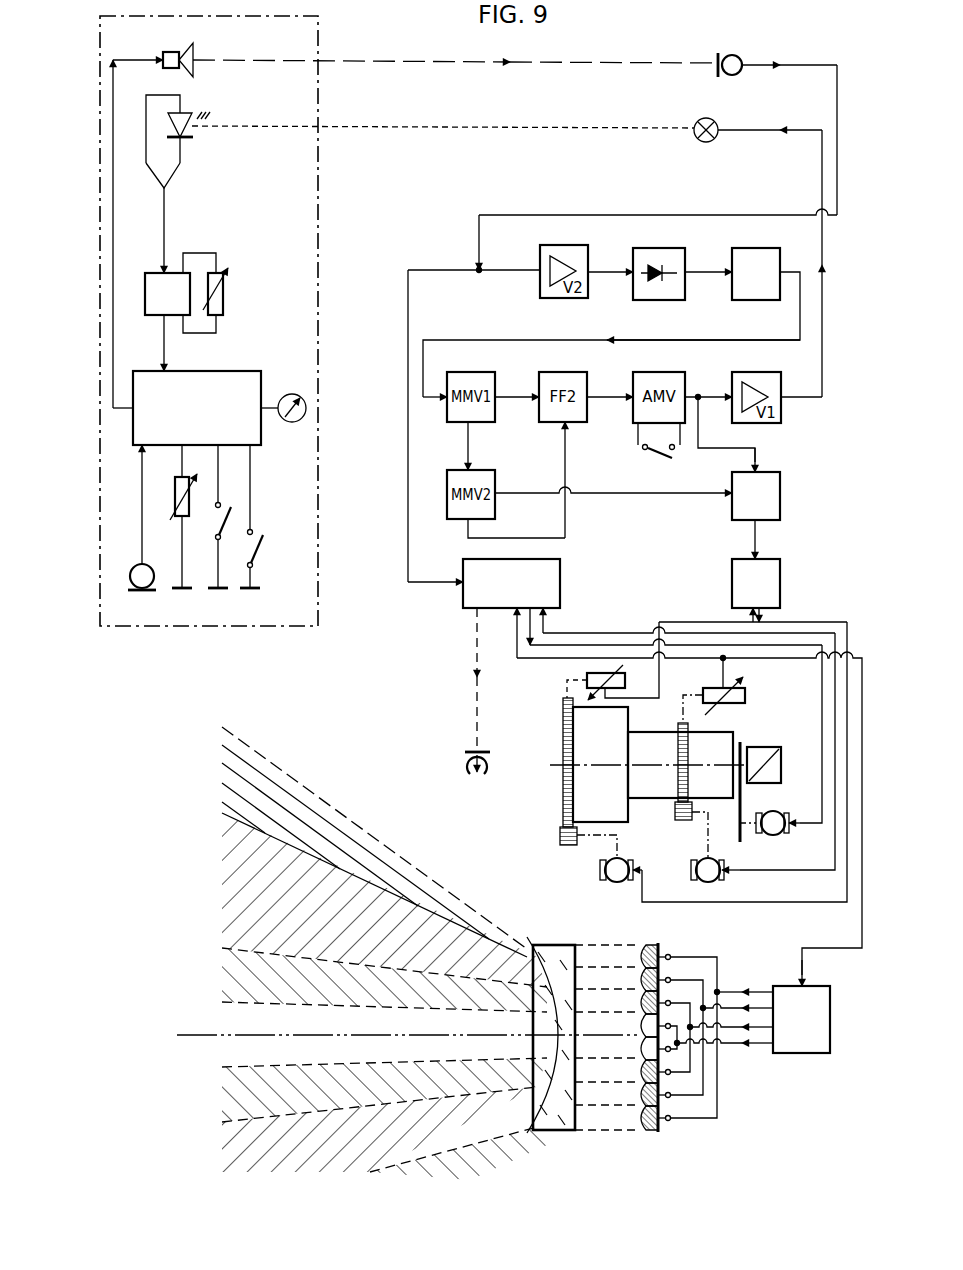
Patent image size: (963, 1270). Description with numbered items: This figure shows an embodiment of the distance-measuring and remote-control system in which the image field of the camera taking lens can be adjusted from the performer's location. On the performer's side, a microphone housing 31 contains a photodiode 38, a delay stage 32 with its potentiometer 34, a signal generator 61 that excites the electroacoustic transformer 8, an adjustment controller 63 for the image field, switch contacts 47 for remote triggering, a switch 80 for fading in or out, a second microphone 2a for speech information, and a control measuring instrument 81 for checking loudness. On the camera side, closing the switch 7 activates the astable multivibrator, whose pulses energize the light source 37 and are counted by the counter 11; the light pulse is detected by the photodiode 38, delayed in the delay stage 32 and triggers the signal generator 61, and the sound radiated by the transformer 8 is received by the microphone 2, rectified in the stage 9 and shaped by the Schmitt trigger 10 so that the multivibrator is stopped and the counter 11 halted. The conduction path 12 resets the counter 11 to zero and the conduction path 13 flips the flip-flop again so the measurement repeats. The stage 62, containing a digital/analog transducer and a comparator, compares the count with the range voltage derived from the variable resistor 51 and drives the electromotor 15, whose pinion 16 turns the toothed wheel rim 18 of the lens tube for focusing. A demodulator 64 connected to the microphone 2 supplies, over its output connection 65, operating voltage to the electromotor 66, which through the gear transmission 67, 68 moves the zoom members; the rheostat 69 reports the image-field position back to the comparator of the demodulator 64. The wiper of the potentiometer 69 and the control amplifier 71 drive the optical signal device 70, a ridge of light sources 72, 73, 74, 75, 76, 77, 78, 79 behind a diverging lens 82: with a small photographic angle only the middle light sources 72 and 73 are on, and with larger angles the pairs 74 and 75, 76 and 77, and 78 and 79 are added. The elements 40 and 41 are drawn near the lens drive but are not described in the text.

The electroacoustic transformer 8 is at (170, 52).
The photodiode 38 is at (182, 140).
The microphone housing 31 is at (300, 221).
The delay stage 32 is at (157, 277).
The potentiometer 34 is at (223, 296).
The signal generator 61 is at (235, 381).
The control measuring instrument 81 is at (292, 394).
The adjustment controller 63 is at (175, 489).
The switch 80 is at (216, 527).
The switch contacts 47 is at (249, 551).
The microphone 2a is at (132, 568).
The microphone 2 is at (741, 58).
The light source 37 is at (715, 122).
The rectifier stage 9 is at (664, 255).
The Schmitt trigger 10 is at (753, 255).
The switch 7 is at (659, 450).
The counter 11 is at (778, 501).
The conduction path 13 is at (568, 517).
The conduction path 12 is at (624, 497).
The stage with digital/analog transducer and comparator 62 is at (778, 585).
The demodulator 64 is at (562, 582).
The output connection 65 is at (689, 621).
The variable resistor 51 is at (625, 681).
The variable resistor 69 is at (746, 696).
The toothed wheel rim 18 is at (562, 712).
The pinion-toothed gear transmission 68 is at (677, 731).
The mirror 40 is at (751, 745).
The motor 41 is at (776, 818).
The pinion-toothed gear transmission 67 is at (675, 822).
The electromotor 66 is at (706, 862).
The pinion 16 is at (560, 841).
The electromotor 15 is at (617, 882).
The diverging lens 82 is at (553, 945).
The optical signal device 70 is at (650, 945).
The light source 79 is at (641, 957).
The light source 77 is at (641, 980).
The light source 75 is at (641, 1003).
The light source 73 is at (641, 1026).
The light source 72 is at (641, 1049).
The light source 74 is at (641, 1072).
The light source 76 is at (641, 1095).
The light source 78 is at (641, 1118).
The control amplifier 71 is at (815, 995).